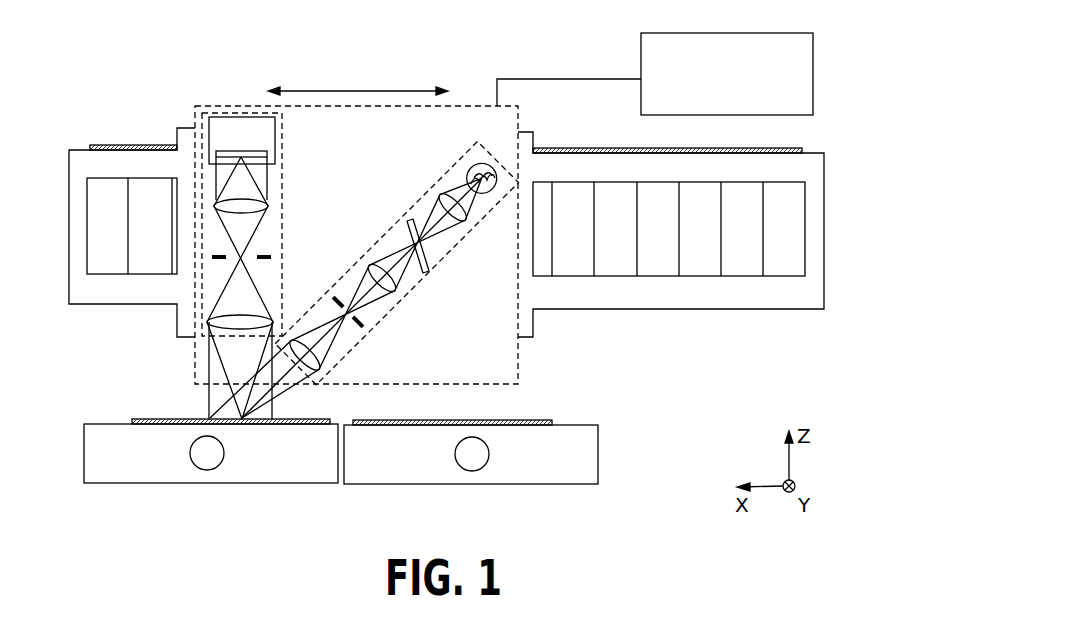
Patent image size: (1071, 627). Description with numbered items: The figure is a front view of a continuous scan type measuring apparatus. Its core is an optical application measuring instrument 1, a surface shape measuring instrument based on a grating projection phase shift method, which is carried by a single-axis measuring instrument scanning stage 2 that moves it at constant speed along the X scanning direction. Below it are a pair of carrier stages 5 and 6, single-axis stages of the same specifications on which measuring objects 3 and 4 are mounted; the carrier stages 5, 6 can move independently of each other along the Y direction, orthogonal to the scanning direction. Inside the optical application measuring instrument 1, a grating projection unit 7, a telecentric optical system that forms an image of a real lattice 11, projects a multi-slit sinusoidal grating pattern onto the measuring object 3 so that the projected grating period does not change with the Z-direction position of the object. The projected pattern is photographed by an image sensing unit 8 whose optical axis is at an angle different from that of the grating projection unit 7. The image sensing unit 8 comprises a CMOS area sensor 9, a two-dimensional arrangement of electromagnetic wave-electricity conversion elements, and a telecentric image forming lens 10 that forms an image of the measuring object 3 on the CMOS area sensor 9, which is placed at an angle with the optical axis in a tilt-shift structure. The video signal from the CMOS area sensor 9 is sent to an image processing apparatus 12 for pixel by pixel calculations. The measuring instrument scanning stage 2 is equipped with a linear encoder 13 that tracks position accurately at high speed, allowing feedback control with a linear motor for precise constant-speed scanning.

The optical application measuring instrument 1 is at (463, 115).
The measuring instrument scanning stage 2 is at (103, 158).
The measuring object 3 is at (163, 418).
The measuring object 4 is at (530, 420).
The carrier stage 5 is at (120, 440).
The carrier stage 6 is at (572, 440).
The grating projection unit 7 is at (433, 183).
The image sensing unit 8 is at (283, 158).
The CMOS area sensor 9 is at (237, 128).
The image forming lens 10 is at (240, 320).
The real lattice 11 is at (424, 274).
The image processing apparatus 12 is at (763, 33).
The linear encoder 13 is at (143, 147).